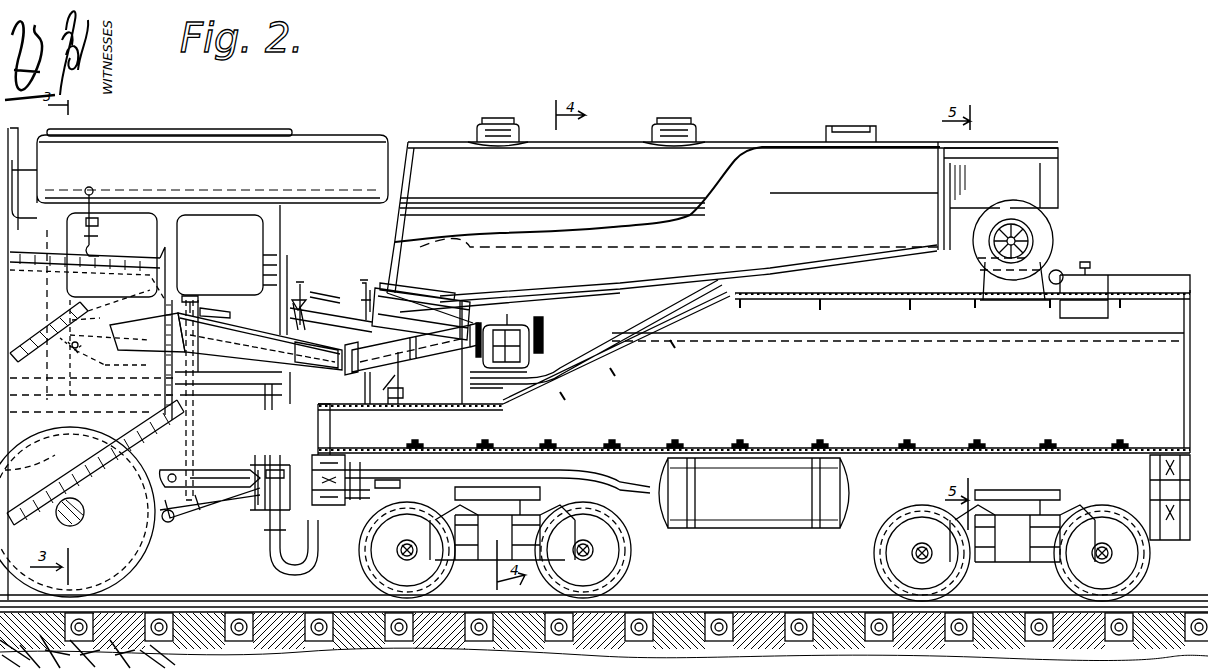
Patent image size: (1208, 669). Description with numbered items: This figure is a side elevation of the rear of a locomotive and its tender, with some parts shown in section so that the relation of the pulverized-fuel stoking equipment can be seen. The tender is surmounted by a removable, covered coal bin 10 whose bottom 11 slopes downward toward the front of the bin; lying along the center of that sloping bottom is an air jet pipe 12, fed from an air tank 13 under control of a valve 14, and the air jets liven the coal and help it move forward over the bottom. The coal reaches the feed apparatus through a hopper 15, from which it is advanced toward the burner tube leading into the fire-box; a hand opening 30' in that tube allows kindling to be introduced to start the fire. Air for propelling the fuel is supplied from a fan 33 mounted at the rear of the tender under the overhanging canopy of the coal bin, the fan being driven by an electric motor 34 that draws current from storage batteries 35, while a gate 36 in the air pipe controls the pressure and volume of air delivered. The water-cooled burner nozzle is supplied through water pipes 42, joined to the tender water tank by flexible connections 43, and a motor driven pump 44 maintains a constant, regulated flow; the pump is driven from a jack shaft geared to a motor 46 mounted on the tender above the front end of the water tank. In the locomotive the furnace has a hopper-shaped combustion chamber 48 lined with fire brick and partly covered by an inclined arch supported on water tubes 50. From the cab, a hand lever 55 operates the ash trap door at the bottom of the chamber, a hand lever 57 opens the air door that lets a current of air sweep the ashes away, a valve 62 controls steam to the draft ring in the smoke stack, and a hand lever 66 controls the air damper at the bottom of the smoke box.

The coal bin 10 is at (782, 210).
The bottom of the coal bin 11 is at (625, 281).
The air jet pipe 12 is at (553, 283).
The air tank 13 is at (750, 500).
The valve 14 is at (365, 305).
The hopper 15 is at (395, 283).
The hand opening 30' is at (260, 320).
The fan 33 is at (1053, 245).
The electric motor 34 is at (1022, 239).
The storage batteries 35 is at (1020, 187).
The gate 36 is at (397, 363).
The water pipes 42 is at (190, 445).
The flexible connections 43 is at (272, 562).
The motor driven pump 44 is at (403, 393).
The motor 46 is at (518, 326).
The combustion chamber 48 is at (92, 321).
The water tubes 50 is at (57, 312).
The hand lever 55 is at (110, 356).
The hand lever 57 is at (145, 325).
The valve 62 is at (99, 223).
The hand lever 66 is at (78, 343).